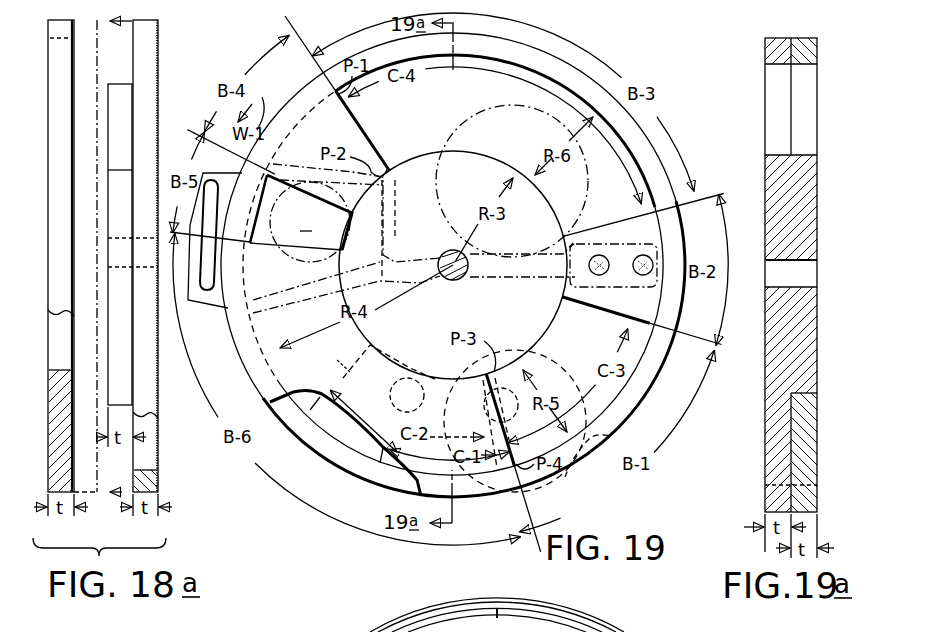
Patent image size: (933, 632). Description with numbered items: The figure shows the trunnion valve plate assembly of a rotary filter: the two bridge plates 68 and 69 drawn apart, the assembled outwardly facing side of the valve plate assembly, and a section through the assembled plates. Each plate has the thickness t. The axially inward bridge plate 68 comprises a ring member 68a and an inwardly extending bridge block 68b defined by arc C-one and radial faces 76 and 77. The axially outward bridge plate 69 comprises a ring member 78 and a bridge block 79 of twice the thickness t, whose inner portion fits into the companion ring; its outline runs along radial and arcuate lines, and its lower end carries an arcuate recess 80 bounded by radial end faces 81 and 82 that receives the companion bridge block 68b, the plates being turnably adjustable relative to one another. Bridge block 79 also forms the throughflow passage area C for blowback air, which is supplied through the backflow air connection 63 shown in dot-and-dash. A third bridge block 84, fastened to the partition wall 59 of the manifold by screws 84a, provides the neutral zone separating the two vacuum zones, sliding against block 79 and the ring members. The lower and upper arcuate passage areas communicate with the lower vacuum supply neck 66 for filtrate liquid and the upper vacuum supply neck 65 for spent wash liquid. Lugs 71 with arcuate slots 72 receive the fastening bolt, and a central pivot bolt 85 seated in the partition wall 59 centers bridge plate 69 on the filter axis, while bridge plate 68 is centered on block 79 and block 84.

In FIG. 19, the internal partition walls 59 is at (394, 180).
In FIG. 19, the backflow air connection 63 is at (301, 218).
In FIG. 19, the upper vacuum supply neck 65 is at (474, 118).
In FIG. 19, the lower vacuum supply neck 66 is at (590, 440).
In FIG. 18A, the bridge plate 68 is at (48, 106).
In FIG. 19A, the bridge plate 68 is at (818, 96).
In FIG. 18A, the ring member 68a is at (46, 484).
In FIG. 19, the ring member 68a is at (328, 452).
In FIG. 18A, the bridge block 68b is at (64, 392).
In FIG. 19, the bridge block 68b is at (417, 402).
In FIG. 18A, the bridge plate 69 is at (162, 120).
In FIG. 19A, the bridge plate 69 is at (764, 92).
In FIG. 19, the lugs or projections 71 is at (212, 296).
In FIG. 19, the arcuate slots 72 is at (220, 198).
In FIG. 19, the radial face 76 is at (482, 410).
In FIG. 19, the radial face 77 is at (416, 397).
In FIG. 18A, the ring member 78 is at (160, 488).
In FIG. 19, the ring member 78 is at (651, 384).
In FIG. 18A, the bridge block 79 is at (121, 92).
In FIG. 19, the bridge block 79 is at (398, 162).
In FIG. 19A, the bridge block 79 is at (812, 208).
In FIG. 19, the arcuate recess 80 is at (348, 432).
In FIG. 19, the radial end face 81 is at (377, 362).
In FIG. 19, the radial end face 82 is at (515, 421).
In FIG. 19, the third bridge block 84 is at (602, 302).
In FIG. 19, the screws 84a is at (604, 256).
In FIG. 19, the central pivot bolt 85 is at (450, 276).